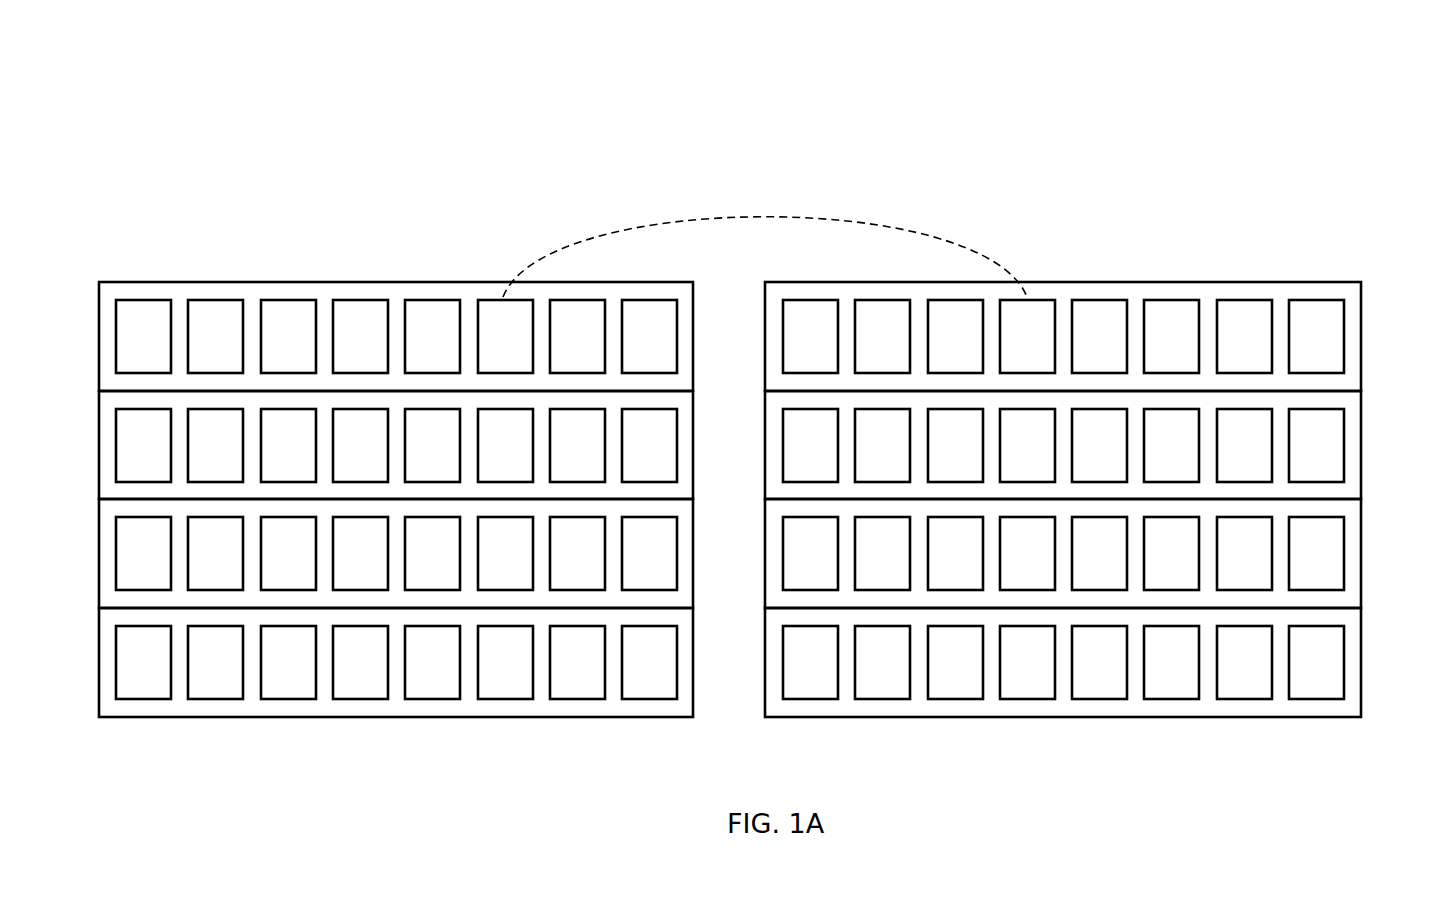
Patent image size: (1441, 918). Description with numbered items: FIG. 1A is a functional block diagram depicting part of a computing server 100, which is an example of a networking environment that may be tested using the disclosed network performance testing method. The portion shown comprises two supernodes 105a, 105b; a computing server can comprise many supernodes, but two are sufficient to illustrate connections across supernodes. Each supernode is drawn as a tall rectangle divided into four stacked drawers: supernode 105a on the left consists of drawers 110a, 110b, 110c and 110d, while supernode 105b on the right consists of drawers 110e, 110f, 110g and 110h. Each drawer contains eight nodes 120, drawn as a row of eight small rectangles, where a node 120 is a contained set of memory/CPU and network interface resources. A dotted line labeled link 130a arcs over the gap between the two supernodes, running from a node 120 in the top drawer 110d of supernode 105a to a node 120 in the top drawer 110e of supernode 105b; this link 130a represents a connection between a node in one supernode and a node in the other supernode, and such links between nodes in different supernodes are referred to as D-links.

The computing server 100 is at (1374, 125).
The supernode 105a is at (240, 282).
The supernode 105b is at (1218, 282).
The drawer 110a is at (693, 655).
The drawer 110b is at (693, 551).
The drawer 110c is at (693, 447).
The drawer 110d is at (693, 337).
The drawer 110e is at (1361, 337).
The drawer 110f is at (1361, 447).
The drawer 110g is at (1361, 553).
The drawer 110h is at (1361, 660).
The node 120 is at (730, 499).
The link 130a is at (755, 218).